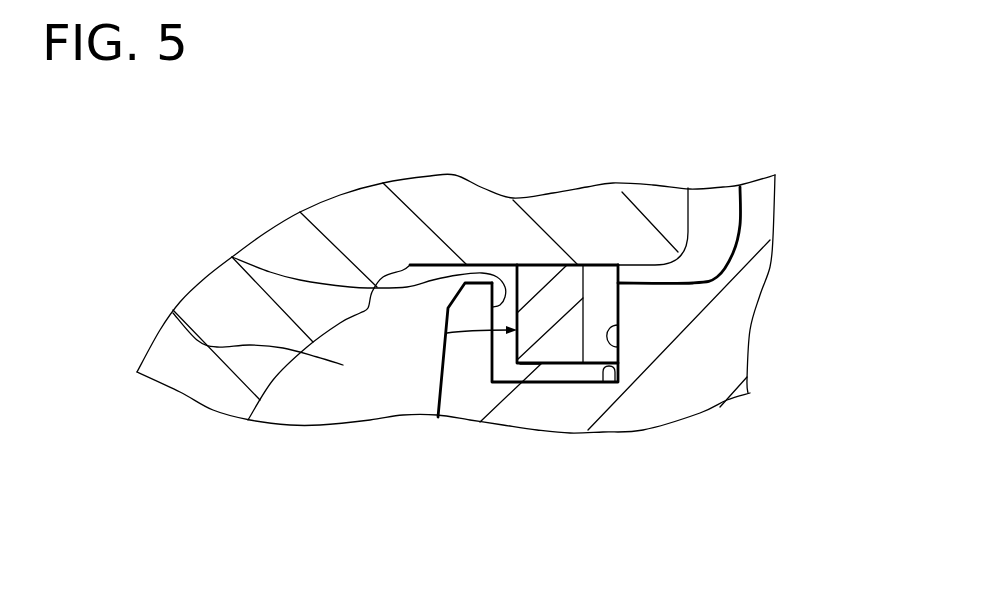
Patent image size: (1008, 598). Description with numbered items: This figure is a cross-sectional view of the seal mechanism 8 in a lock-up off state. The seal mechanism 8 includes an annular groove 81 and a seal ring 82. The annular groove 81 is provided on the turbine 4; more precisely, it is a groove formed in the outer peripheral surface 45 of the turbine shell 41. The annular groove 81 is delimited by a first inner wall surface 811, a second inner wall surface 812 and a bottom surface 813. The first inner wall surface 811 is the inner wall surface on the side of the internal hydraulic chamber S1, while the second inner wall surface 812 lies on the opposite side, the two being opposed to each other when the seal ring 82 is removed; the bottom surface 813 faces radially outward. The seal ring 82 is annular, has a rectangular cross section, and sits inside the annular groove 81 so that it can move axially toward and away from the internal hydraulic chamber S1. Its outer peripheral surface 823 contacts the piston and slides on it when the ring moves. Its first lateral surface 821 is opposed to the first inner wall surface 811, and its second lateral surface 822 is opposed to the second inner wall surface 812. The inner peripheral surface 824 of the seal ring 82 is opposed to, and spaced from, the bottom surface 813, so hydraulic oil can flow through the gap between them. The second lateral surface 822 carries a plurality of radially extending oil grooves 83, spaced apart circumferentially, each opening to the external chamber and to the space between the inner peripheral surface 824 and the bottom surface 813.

The turbine 4 is at (786, 206).
The turbine shell 41 is at (460, 385).
The outer peripheral surface 45 is at (672, 283).
The seal mechanism 8 is at (548, 161).
The annular groove 81 is at (568, 376).
The first inner wall surface 811 is at (232, 257).
The second inner wall surface 812 is at (618, 347).
The bottom surface 813 is at (613, 382).
The seal ring 82 is at (492, 295).
The first lateral surface 821 is at (517, 275).
The second lateral surface 822 is at (633, 265).
The outer peripheral surface 823 is at (565, 265).
The inner peripheral surface 824 is at (537, 367).
The oil groove 83 is at (585, 338).
The internal hydraulic chamber S1 is at (173, 313).